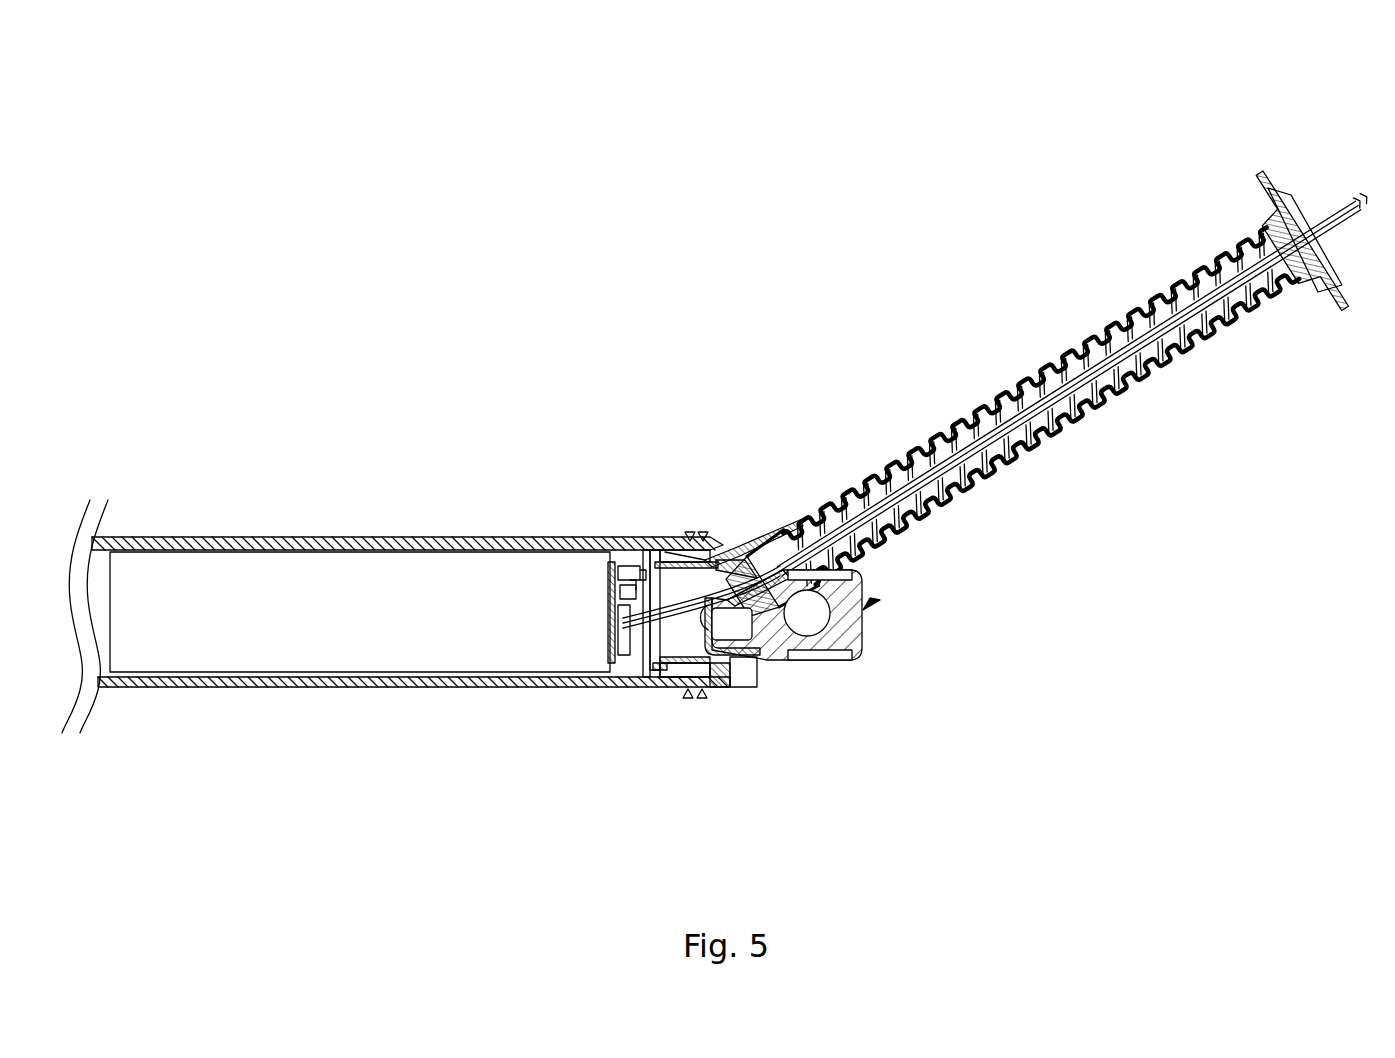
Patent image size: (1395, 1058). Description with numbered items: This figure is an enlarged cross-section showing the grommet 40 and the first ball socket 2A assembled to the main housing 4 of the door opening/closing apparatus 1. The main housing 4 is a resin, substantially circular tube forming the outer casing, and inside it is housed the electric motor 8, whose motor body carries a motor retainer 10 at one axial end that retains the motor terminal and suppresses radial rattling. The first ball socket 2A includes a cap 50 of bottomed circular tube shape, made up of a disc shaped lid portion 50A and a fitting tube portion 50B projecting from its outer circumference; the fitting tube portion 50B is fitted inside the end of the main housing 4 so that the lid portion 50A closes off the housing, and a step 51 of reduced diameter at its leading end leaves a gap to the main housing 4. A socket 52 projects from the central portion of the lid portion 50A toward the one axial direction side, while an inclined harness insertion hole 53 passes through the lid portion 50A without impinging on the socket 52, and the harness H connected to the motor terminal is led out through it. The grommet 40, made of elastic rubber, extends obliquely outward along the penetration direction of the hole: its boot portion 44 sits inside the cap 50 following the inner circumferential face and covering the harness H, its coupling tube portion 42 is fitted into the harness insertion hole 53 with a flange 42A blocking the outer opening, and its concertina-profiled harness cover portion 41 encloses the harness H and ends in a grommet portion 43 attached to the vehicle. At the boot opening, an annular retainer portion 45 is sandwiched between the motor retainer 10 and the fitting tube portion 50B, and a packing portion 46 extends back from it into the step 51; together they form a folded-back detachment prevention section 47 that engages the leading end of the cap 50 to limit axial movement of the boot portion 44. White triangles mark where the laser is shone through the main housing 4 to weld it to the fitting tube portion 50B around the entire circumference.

The door opening/closing apparatus 1 is at (540, 365).
The main housing 4 is at (508, 538).
The electric motor 8 is at (485, 640).
The motor retainer 10 is at (590, 545).
The step 51 is at (662, 548).
The harness insertion hole 53 is at (730, 545).
The coupling tube portion 42 is at (750, 545).
The flange 42A is at (820, 578).
The first ball socket 2A is at (866, 606).
The socket 52 is at (845, 628).
The boot portion 44 is at (725, 648).
The lid portion 50A is at (722, 662).
The fitting tube portion 50B is at (680, 680).
The cap 50 is at (708, 672).
The packing portion 46 is at (668, 672).
The retainer portion 45 is at (625, 688).
The detachment prevention section 47 is at (684, 618).
The harness cover portion 41 is at (950, 412).
The grommet 40 is at (1026, 368).
The grommet portion 43 is at (1262, 212).
The harness H is at (1330, 218).